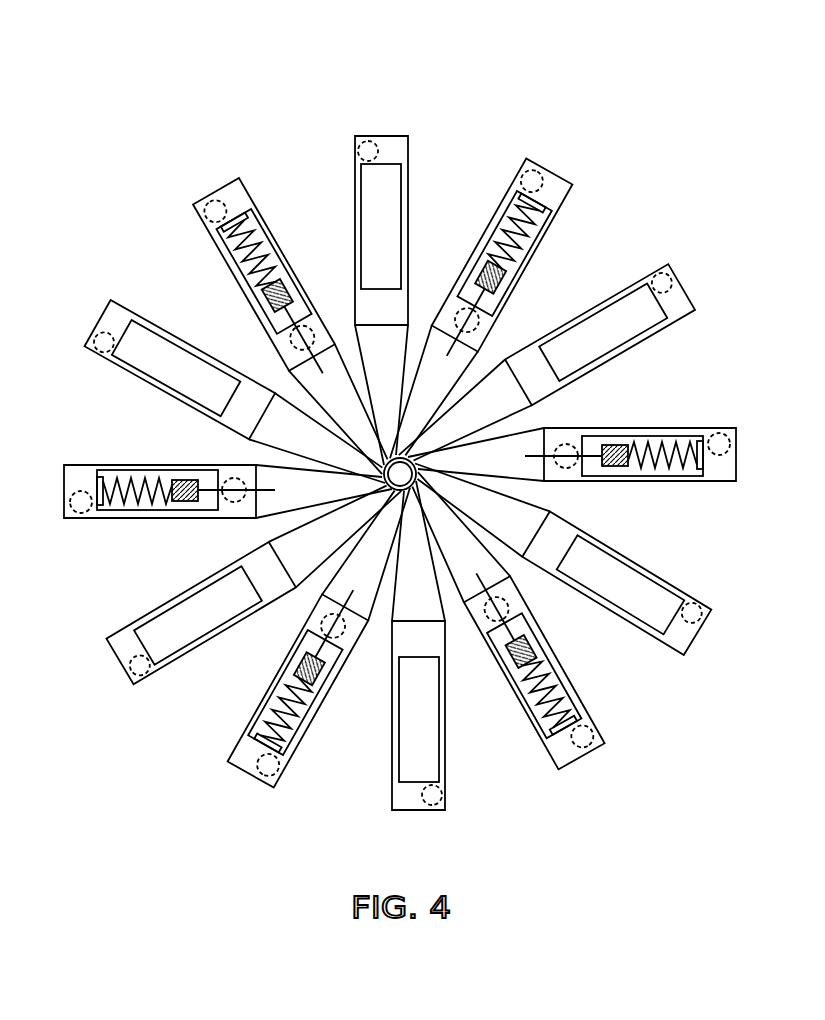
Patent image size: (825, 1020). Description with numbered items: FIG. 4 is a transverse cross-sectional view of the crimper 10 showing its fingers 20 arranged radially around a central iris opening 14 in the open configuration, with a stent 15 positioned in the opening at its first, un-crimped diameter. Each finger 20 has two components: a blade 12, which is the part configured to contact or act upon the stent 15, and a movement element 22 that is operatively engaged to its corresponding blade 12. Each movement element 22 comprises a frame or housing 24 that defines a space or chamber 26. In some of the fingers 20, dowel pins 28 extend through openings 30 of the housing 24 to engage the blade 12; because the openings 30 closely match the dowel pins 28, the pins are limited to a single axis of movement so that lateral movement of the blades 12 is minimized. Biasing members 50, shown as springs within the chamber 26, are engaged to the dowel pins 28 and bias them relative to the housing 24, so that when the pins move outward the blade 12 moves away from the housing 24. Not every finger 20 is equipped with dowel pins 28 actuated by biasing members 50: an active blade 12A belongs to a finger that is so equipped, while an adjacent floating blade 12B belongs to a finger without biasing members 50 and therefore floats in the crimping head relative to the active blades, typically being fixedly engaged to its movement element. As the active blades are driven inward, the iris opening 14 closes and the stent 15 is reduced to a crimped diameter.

The crimper 10 is at (697, 192).
The blade 12 is at (532, 430).
The active blade 12A is at (425, 340).
The floating blade 12B is at (268, 438).
The iris opening 14 is at (400, 457).
The stent 15 is at (417, 470).
The finger 20 is at (406, 129).
The movement element 22 is at (563, 210).
The housing 24 is at (560, 178).
The chamber 26 is at (517, 203).
The dowel pin 28 is at (503, 235).
The opening 30 is at (466, 328).
The biasing member 50 is at (516, 243).